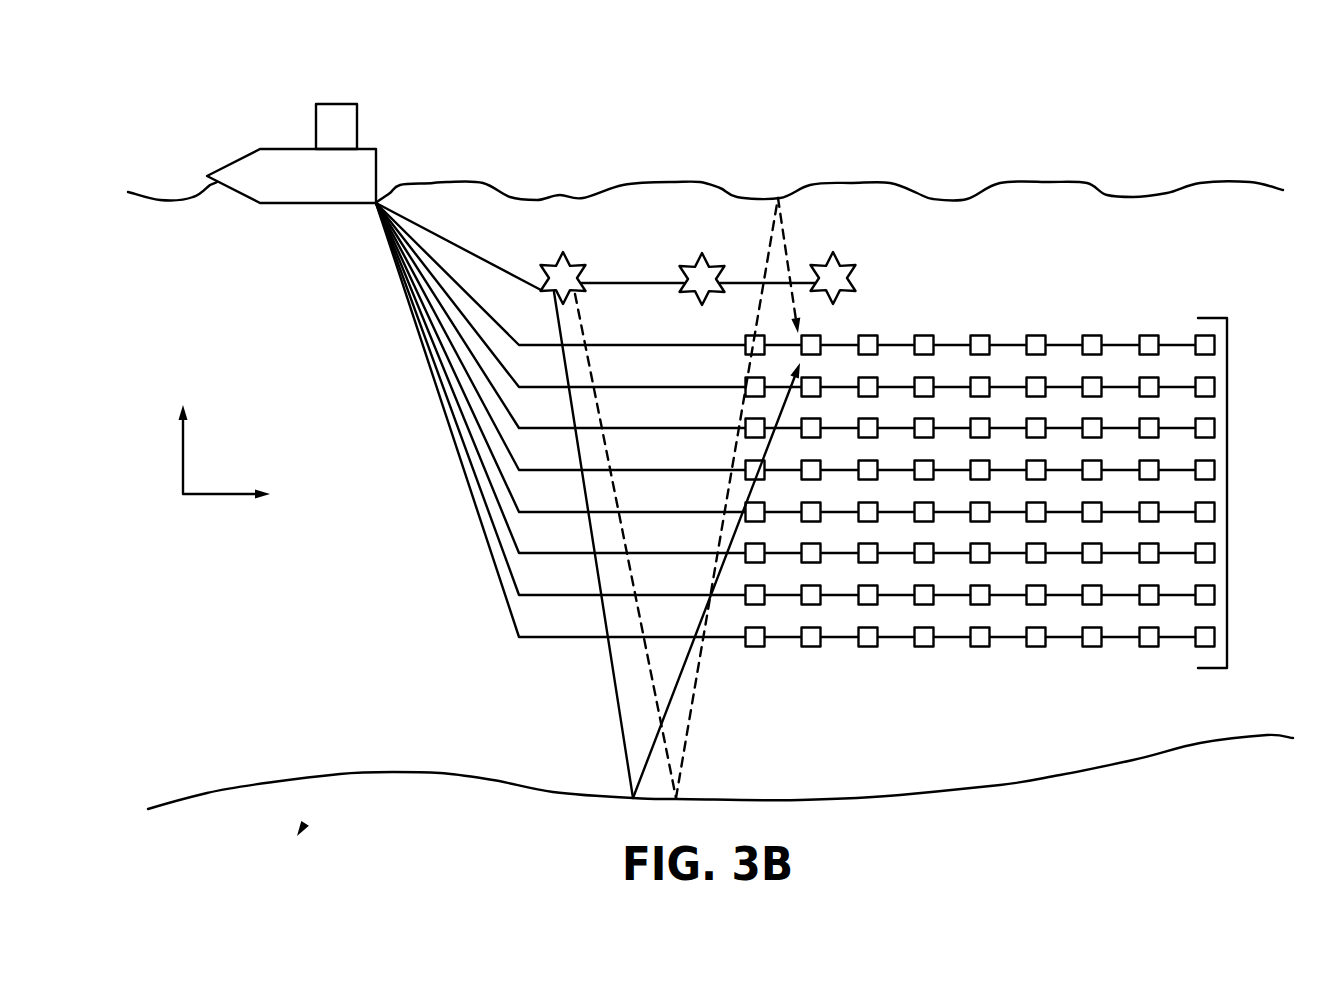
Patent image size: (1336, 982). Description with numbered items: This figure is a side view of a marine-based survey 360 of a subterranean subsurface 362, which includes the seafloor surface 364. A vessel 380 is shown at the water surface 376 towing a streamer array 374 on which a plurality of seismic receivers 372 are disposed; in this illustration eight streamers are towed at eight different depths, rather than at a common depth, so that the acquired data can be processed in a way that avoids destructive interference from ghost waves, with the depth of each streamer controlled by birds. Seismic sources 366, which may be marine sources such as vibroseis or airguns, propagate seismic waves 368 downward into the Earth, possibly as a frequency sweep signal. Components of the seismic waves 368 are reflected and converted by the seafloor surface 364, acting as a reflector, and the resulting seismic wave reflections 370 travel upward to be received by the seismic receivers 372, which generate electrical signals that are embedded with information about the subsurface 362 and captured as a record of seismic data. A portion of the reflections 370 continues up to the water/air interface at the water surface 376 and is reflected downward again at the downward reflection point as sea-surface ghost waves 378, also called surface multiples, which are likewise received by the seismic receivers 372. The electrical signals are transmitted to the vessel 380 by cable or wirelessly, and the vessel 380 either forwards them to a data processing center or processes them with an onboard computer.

The marine-based survey 360 is at (192, 88).
The subterranean subsurface 362 is at (302, 828).
The seafloor surface 364 is at (1062, 773).
The seismic sources 366 is at (590, 280).
The seismic waves 368 is at (593, 371).
The seismic wave reflections 370 is at (735, 452).
The seismic receivers 372 is at (1150, 335).
The streamer array 374 is at (1227, 489).
The water surface 376 is at (1018, 182).
The sea-surface ghost waves 378 is at (788, 234).
The vessel 380 is at (337, 103).